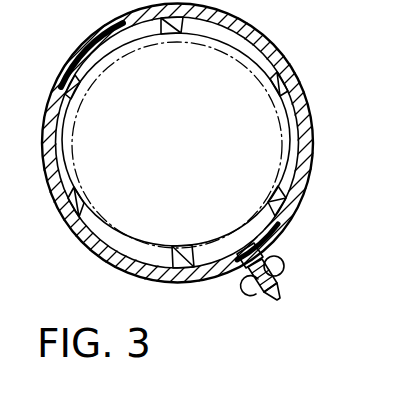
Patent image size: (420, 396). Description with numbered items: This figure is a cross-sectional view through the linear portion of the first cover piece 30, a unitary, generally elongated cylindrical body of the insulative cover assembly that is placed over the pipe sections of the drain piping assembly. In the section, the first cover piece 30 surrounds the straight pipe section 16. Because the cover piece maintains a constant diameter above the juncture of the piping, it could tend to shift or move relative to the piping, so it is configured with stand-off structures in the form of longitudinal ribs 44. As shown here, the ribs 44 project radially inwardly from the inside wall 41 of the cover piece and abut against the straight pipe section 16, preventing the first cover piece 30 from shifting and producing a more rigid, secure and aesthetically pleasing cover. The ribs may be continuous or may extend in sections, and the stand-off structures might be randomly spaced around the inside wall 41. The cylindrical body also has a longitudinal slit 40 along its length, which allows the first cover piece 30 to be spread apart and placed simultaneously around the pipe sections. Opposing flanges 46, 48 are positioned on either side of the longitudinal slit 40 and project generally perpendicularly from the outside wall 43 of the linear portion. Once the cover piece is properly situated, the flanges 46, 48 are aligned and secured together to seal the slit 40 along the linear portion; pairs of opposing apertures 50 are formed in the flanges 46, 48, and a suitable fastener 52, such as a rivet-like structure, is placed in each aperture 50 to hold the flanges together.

The straight pipe section 16 is at (263, 32).
The first cover piece 30 is at (315, 102).
The longitudinal slit 40 is at (241, 243).
The inside wall 41 is at (57, 146).
The outside wall 43 is at (92, 257).
The longitudinal ribs 44 is at (170, 22).
The flange 46 is at (264, 306).
The flange 48 is at (284, 286).
The apertures 50 is at (274, 292).
The fastener 52 is at (248, 290).